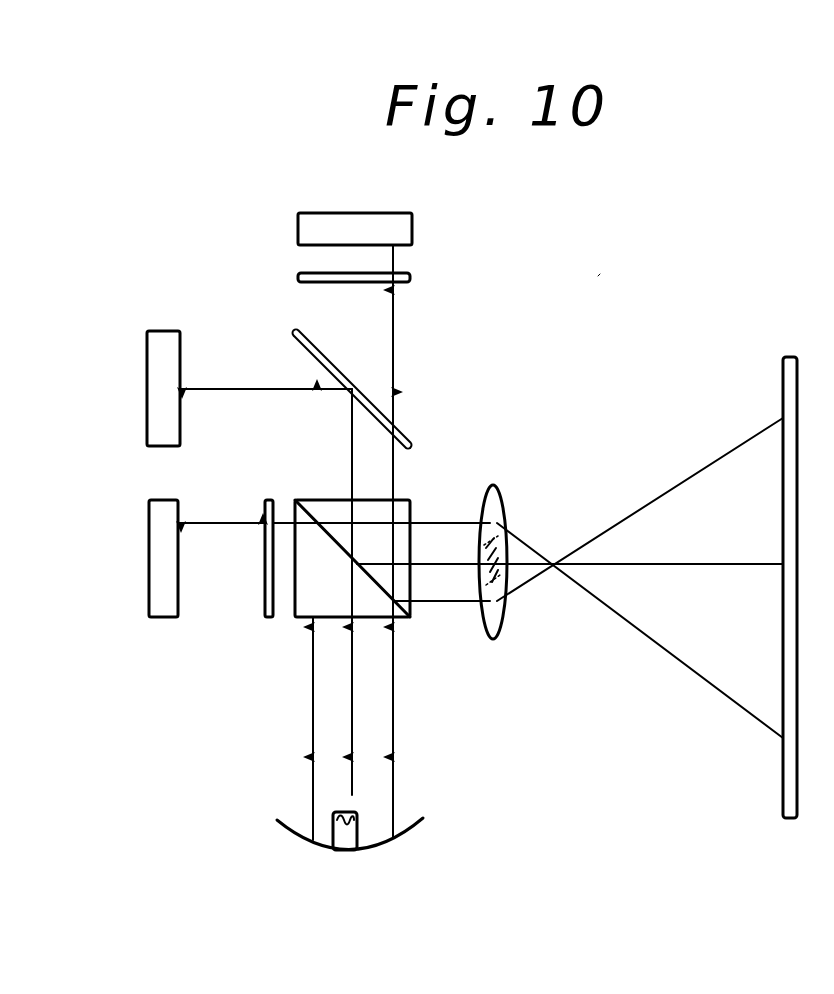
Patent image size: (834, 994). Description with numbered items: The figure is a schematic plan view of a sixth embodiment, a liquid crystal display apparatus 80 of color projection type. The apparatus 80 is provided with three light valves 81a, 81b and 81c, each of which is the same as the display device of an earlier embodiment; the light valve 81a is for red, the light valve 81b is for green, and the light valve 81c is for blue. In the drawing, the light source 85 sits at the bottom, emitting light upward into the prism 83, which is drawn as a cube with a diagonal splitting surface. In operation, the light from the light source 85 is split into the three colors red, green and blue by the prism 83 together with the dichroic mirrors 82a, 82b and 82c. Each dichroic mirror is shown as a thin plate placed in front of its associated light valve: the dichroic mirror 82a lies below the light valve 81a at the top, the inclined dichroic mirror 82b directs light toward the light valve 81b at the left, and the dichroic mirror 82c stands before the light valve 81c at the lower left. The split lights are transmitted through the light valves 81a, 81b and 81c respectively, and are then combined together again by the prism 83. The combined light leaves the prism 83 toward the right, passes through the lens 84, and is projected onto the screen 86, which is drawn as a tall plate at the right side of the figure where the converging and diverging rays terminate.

The liquid crystal display apparatus 80 is at (606, 262).
The light valve 81a is at (405, 230).
The dichroic mirror 82a is at (410, 280).
The light valve 81b is at (172, 352).
The dichroic mirror 82b is at (402, 432).
The prism 83 is at (405, 510).
The light valve 81c is at (170, 565).
The dichroic mirror 82c is at (268, 610).
The lens 84 is at (495, 515).
The light source 85 is at (418, 828).
The screen 86 is at (786, 378).